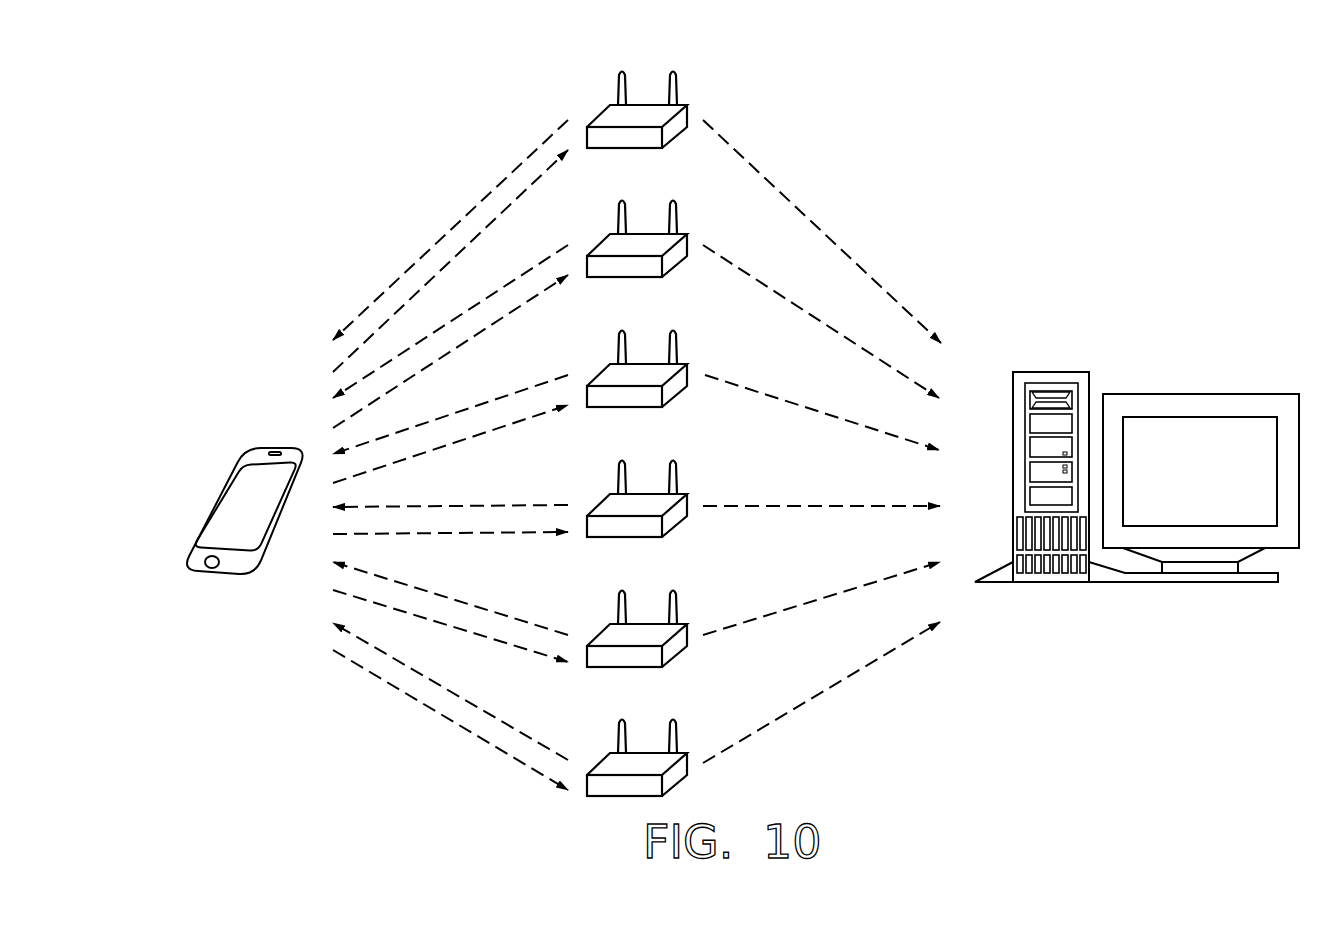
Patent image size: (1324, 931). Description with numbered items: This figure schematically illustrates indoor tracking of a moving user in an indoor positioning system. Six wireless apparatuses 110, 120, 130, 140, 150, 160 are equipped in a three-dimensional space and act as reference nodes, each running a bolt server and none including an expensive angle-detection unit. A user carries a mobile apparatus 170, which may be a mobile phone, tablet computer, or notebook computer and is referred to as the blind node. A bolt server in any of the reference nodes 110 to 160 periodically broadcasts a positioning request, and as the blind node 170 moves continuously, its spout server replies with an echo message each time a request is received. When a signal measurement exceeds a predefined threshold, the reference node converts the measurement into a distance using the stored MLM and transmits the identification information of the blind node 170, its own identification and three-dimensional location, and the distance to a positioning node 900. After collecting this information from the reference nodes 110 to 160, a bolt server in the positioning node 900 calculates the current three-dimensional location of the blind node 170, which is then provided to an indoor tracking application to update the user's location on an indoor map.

The wireless apparatus 110 is at (647, 101).
The wireless apparatus 120 is at (647, 230).
The wireless apparatus 130 is at (647, 360).
The wireless apparatus 140 is at (647, 490).
The wireless apparatus 150 is at (647, 620).
The wireless apparatus 160 is at (647, 749).
The mobile apparatus 170 is at (210, 502).
The positioning node 900 is at (1200, 393).